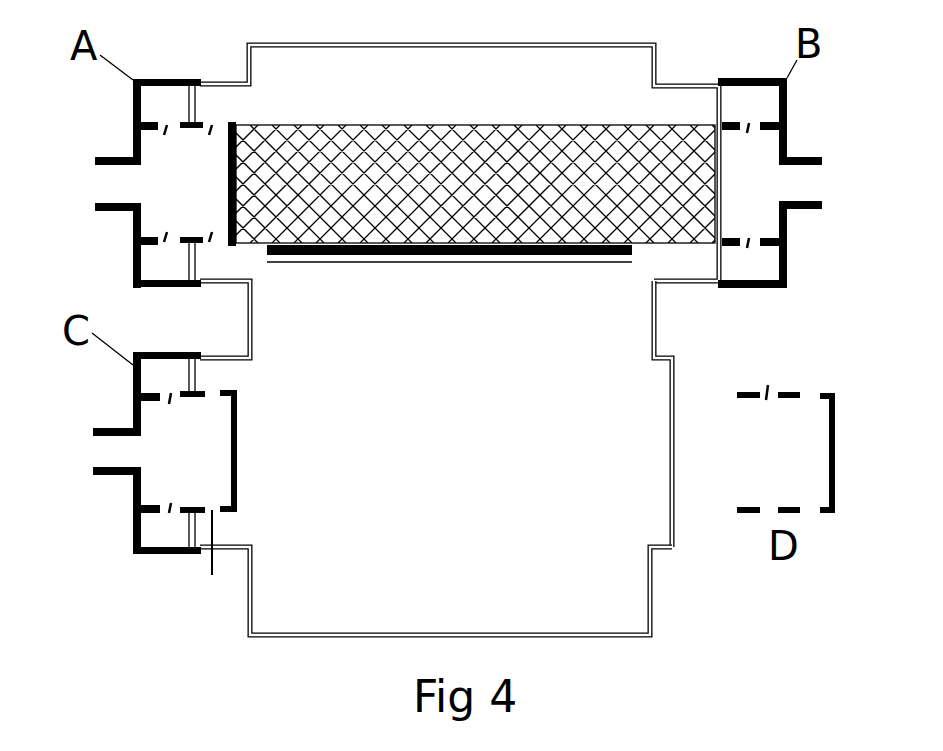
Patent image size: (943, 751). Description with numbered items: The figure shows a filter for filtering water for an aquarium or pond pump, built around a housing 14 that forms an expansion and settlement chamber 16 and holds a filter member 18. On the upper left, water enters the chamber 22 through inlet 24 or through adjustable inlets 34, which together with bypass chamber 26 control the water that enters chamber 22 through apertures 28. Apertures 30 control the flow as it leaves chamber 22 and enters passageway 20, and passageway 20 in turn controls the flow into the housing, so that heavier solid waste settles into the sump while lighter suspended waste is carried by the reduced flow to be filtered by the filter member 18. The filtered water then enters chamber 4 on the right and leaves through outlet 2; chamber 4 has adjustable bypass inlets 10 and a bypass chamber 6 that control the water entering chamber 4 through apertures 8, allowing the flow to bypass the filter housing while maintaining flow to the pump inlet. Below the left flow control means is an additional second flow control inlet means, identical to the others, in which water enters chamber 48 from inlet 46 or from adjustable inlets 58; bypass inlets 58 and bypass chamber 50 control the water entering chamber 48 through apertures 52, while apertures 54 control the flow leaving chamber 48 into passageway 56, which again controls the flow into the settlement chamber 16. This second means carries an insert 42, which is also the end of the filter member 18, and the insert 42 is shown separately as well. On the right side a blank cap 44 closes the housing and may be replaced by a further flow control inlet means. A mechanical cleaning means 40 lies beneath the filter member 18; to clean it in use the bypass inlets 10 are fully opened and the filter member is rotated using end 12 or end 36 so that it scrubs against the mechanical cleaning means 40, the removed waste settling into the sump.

The outlet 2 is at (805, 185).
The chamber 4 is at (762, 203).
The bypass chamber 6 is at (762, 106).
The apertures 8 is at (742, 185).
The adjustable bypass inlets 10 is at (752, 76).
The end 12 is at (780, 285).
The housing 14 is at (626, 44).
The expansion and settlement chamber 16 is at (462, 576).
The filter member 18 is at (582, 117).
The passageway 20 is at (237, 106).
The chamber 22 is at (200, 201).
The inlet 24 is at (110, 185).
The bypass chamber 26 is at (152, 103).
The apertures 28 is at (163, 183).
The apertures 30 is at (204, 182).
The adjustable inlets 34 is at (175, 78).
The end 36 is at (133, 283).
The mechanical cleaning means 40 is at (476, 255).
The insert 42 is at (237, 470).
The blank cap 44 is at (695, 455).
The inlet 46 is at (110, 452).
The chamber 48 is at (198, 471).
The bypass chamber 50 is at (155, 380).
The apertures 52 is at (474, 433).
The apertures 54 is at (211, 385).
The passageway 56 is at (230, 376).
The adjustable inlets 58 is at (168, 350).